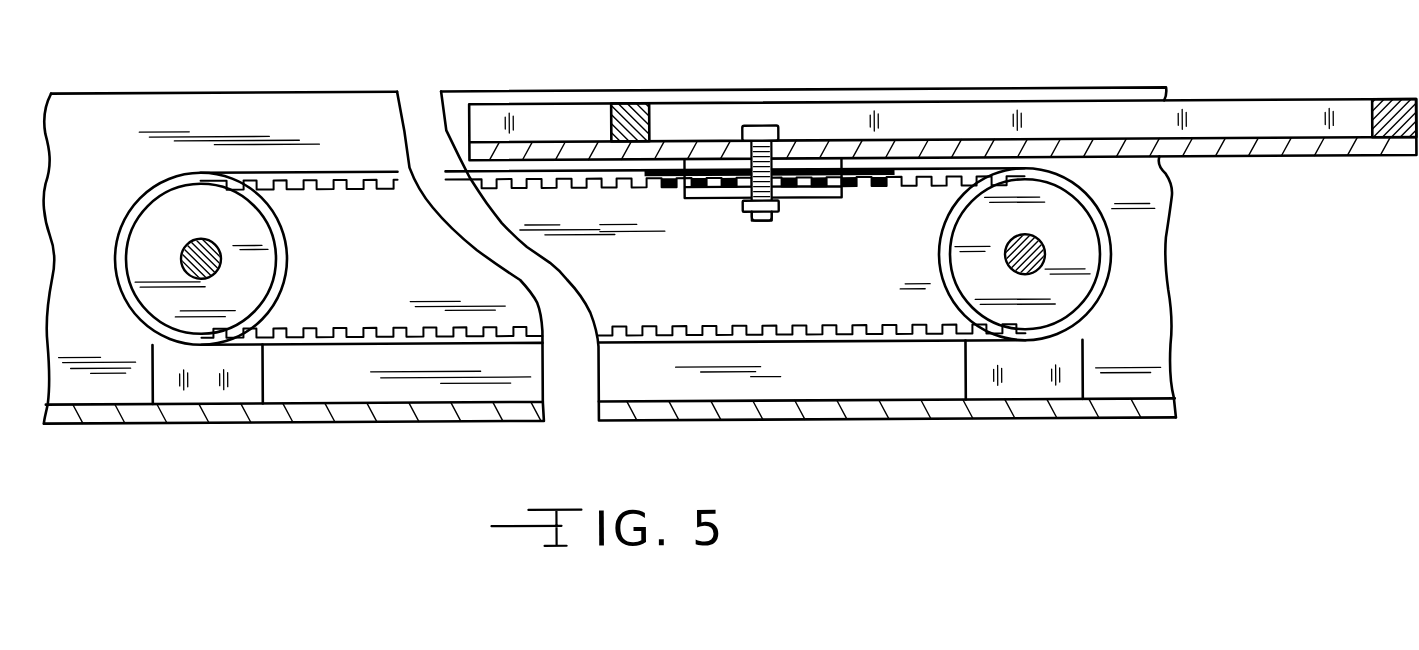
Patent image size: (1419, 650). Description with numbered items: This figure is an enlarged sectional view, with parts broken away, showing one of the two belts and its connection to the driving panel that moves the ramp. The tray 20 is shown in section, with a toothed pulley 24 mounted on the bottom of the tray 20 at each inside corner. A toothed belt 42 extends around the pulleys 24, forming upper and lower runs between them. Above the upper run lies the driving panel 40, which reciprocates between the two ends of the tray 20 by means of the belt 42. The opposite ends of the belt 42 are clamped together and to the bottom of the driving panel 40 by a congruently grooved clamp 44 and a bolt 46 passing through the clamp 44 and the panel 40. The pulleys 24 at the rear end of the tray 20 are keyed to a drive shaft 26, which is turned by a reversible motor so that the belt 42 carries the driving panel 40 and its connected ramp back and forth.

The tray 20 is at (1017, 422).
The toothed pulleys 24 is at (263, 267).
The drive shaft 26 is at (184, 247).
The driving panel 40 is at (1218, 100).
The toothed belts 42 is at (367, 188).
The congruently grooved clamp 44 is at (810, 197).
The bolt 46 is at (748, 207).